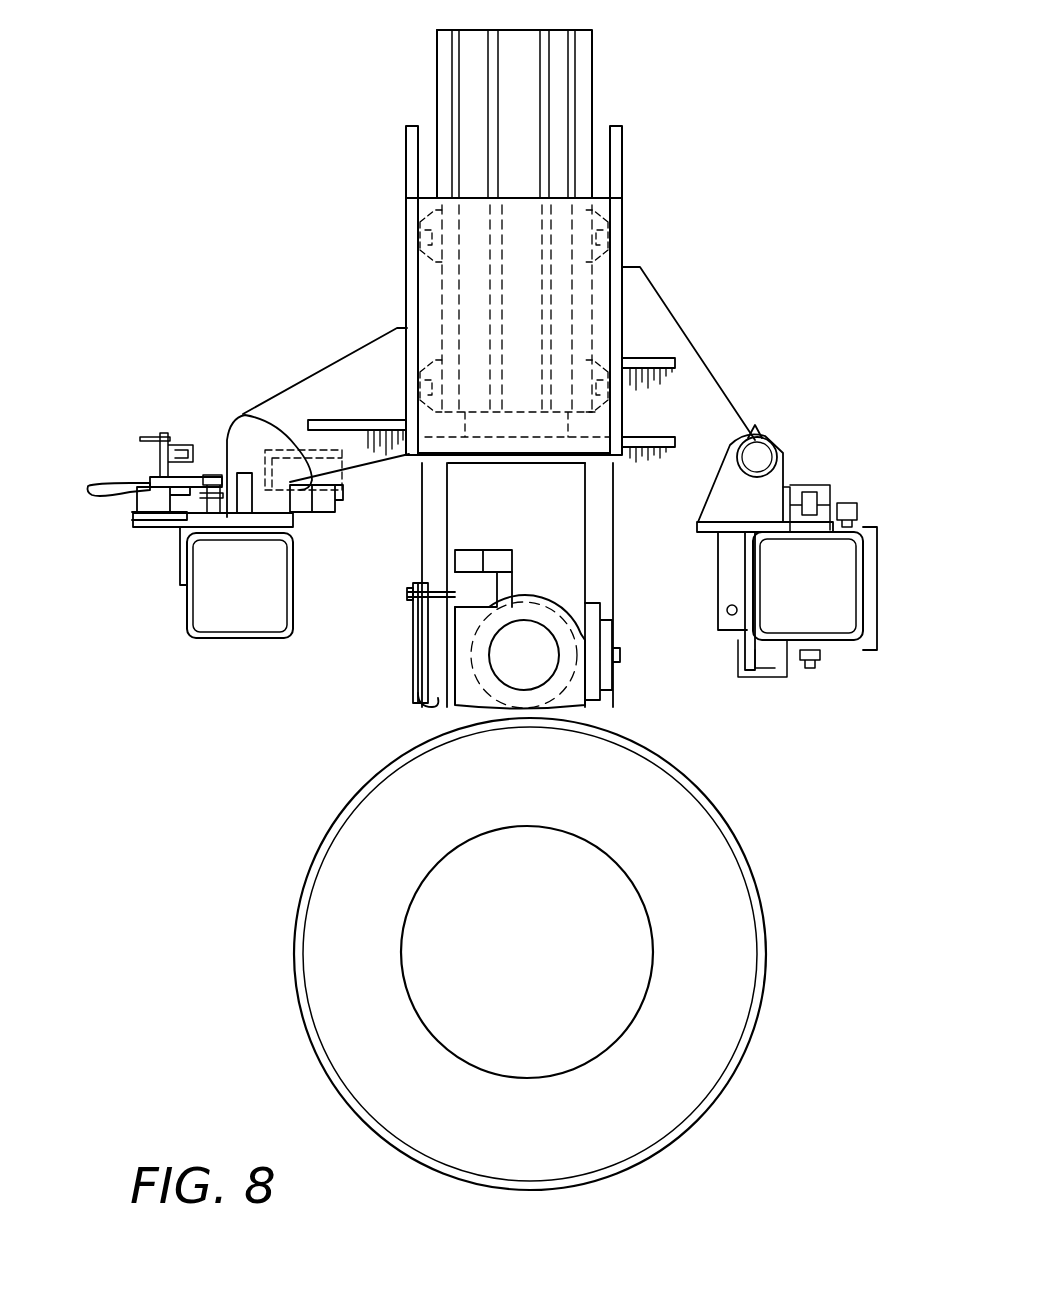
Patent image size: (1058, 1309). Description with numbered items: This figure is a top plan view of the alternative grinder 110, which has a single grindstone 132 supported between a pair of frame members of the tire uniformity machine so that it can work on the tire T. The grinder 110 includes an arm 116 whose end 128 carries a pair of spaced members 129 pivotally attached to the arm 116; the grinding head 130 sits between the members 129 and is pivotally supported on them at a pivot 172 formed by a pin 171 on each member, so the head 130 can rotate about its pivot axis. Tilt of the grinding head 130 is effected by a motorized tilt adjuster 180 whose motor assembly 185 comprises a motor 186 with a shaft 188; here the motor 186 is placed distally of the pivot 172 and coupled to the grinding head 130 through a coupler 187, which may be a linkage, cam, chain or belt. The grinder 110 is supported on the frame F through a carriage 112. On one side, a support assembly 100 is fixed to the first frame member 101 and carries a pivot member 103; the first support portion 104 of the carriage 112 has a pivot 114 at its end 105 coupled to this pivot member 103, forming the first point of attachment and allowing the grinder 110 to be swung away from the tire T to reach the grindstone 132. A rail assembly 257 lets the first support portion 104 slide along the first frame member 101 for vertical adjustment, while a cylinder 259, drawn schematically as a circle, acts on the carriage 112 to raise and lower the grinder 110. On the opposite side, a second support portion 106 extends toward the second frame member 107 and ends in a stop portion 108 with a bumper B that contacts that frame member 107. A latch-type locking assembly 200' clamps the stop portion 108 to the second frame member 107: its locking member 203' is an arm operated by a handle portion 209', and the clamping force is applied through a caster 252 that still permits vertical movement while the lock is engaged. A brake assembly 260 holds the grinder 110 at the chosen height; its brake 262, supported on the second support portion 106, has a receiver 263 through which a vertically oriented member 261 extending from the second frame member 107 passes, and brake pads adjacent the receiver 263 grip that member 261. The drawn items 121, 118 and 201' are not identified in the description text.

The mast column edge 121 is at (437, 95).
The arm 116 is at (583, 100).
The carriage 112 is at (617, 160).
The grinder 110 is at (358, 225).
The internal drive components 118 is at (620, 232).
The second support portion 106 is at (337, 377).
The first support portion 104 is at (692, 372).
The end 105 is at (760, 452).
The pivot 114 is at (770, 445).
The pivot member 103 is at (765, 488).
The rail assembly 257 is at (817, 505).
The first frame member 101 is at (857, 575).
The support assembly 100 is at (713, 540).
The cylinder 259 is at (727, 613).
The grinding head 130 is at (628, 679).
The spaced members 129 is at (440, 508).
The end 128 is at (433, 482).
The motorized tilt adjuster 180 is at (510, 575).
The motor assembly 185 is at (457, 573).
The motor 186 is at (480, 583).
The shaft 188 is at (443, 590).
The coupler 187 is at (413, 634).
The pivot 172 is at (412, 694).
The pin 171 is at (430, 710).
The grindstone 132 is at (560, 713).
The tire T is at (318, 860).
The second frame member 107 is at (187, 628).
The bumper B is at (197, 532).
The tab 201' is at (131, 557).
The stop portion 108 is at (183, 555).
The frame F is at (233, 638).
The brake assembly 260 is at (272, 533).
The handle portion 209' is at (139, 476).
The locking assembly 200' is at (152, 417).
The caster 252 is at (181, 453).
The locking member 203' is at (101, 428).
The vertically oriented member 261 is at (275, 505).
The brake 262 is at (337, 467).
The receiver 263 is at (300, 445).